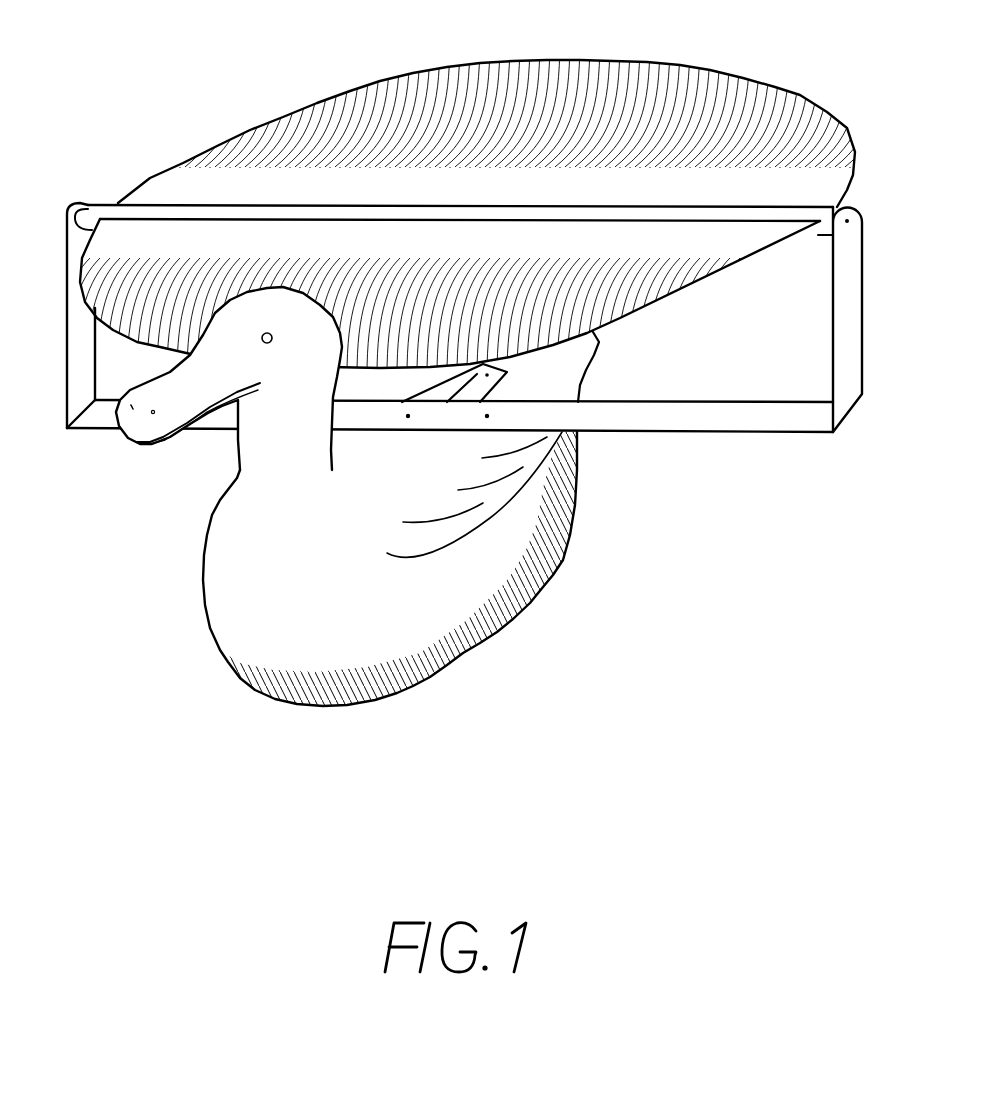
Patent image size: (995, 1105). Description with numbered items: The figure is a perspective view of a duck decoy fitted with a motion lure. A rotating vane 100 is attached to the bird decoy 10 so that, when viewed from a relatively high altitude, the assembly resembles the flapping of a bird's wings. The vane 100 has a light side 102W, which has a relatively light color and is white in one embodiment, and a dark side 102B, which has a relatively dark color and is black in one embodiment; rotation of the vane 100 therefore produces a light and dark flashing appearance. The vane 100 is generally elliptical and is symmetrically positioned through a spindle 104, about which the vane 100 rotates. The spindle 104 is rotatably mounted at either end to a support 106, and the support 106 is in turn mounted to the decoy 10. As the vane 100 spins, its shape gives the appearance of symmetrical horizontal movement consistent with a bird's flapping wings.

The bird decoy 10 is at (222, 602).
The rotating vane 100 is at (482, 198).
The dark side 102B is at (374, 63).
The light side 102W is at (185, 178).
The spindle 104 is at (105, 208).
The support 106 is at (852, 390).